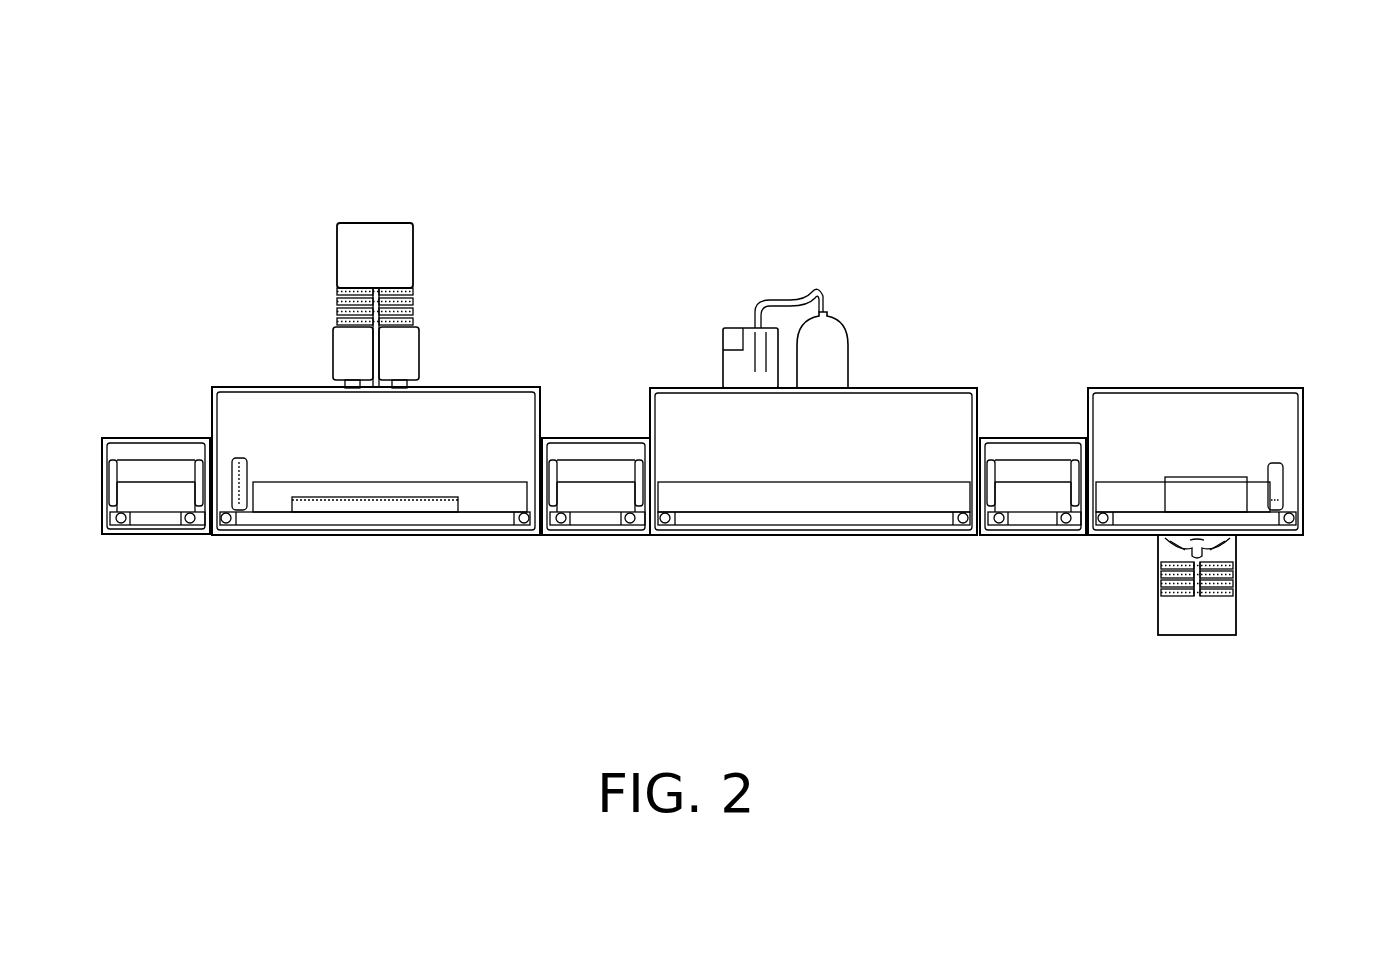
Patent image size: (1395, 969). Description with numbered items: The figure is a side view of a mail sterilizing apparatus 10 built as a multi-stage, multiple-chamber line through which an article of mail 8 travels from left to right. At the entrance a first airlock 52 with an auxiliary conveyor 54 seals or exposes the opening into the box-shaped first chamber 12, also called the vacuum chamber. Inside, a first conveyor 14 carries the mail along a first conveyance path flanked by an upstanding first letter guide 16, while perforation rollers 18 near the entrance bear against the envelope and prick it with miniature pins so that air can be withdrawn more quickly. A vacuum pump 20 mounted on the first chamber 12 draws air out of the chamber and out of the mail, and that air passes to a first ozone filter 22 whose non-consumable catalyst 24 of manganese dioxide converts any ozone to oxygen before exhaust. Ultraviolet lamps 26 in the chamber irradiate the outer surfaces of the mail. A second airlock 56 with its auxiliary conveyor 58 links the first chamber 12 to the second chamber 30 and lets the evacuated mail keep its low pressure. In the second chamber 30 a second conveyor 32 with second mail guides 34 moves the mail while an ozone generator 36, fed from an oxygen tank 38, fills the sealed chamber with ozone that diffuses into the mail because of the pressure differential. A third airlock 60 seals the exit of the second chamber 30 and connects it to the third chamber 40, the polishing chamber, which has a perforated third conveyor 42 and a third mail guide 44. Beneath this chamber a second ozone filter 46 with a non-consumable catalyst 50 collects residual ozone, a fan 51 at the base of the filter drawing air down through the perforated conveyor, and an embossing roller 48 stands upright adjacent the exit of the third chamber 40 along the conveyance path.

The mail sterilizing apparatus 10 is at (820, 183).
The first chamber 12 is at (478, 408).
The first conveyor 14 is at (290, 520).
The first letter guide 16 is at (485, 492).
The perforation rollers 18 is at (255, 465).
The vacuum pump 20 is at (335, 342).
The first ozone filter 22 is at (413, 238).
The non-consumable catalyst 24 is at (413, 292).
The ultraviolet lamps 26 is at (370, 500).
The second chamber 30 is at (917, 405).
The second conveyor 32 is at (760, 520).
The second mail guides 34 is at (868, 497).
The ozone generator 36 is at (730, 330).
The oxygen tank 38 is at (834, 335).
The third chamber 40 is at (1212, 402).
The third conveyor 42 is at (1133, 545).
The third mail guide 44 is at (1126, 480).
The second ozone filter 46 is at (1236, 626).
The embossing roller 48 is at (1283, 482).
The non-consumable catalyst 50 is at (1233, 592).
The fan 51 is at (1228, 549).
The first airlock 52 is at (148, 440).
The auxiliary conveyor 54 is at (150, 520).
The second airlock 56 is at (590, 438).
The auxiliary conveyor 58 is at (582, 520).
The third airlock 60 is at (1028, 450).
The article of mail 8 is at (1200, 497).